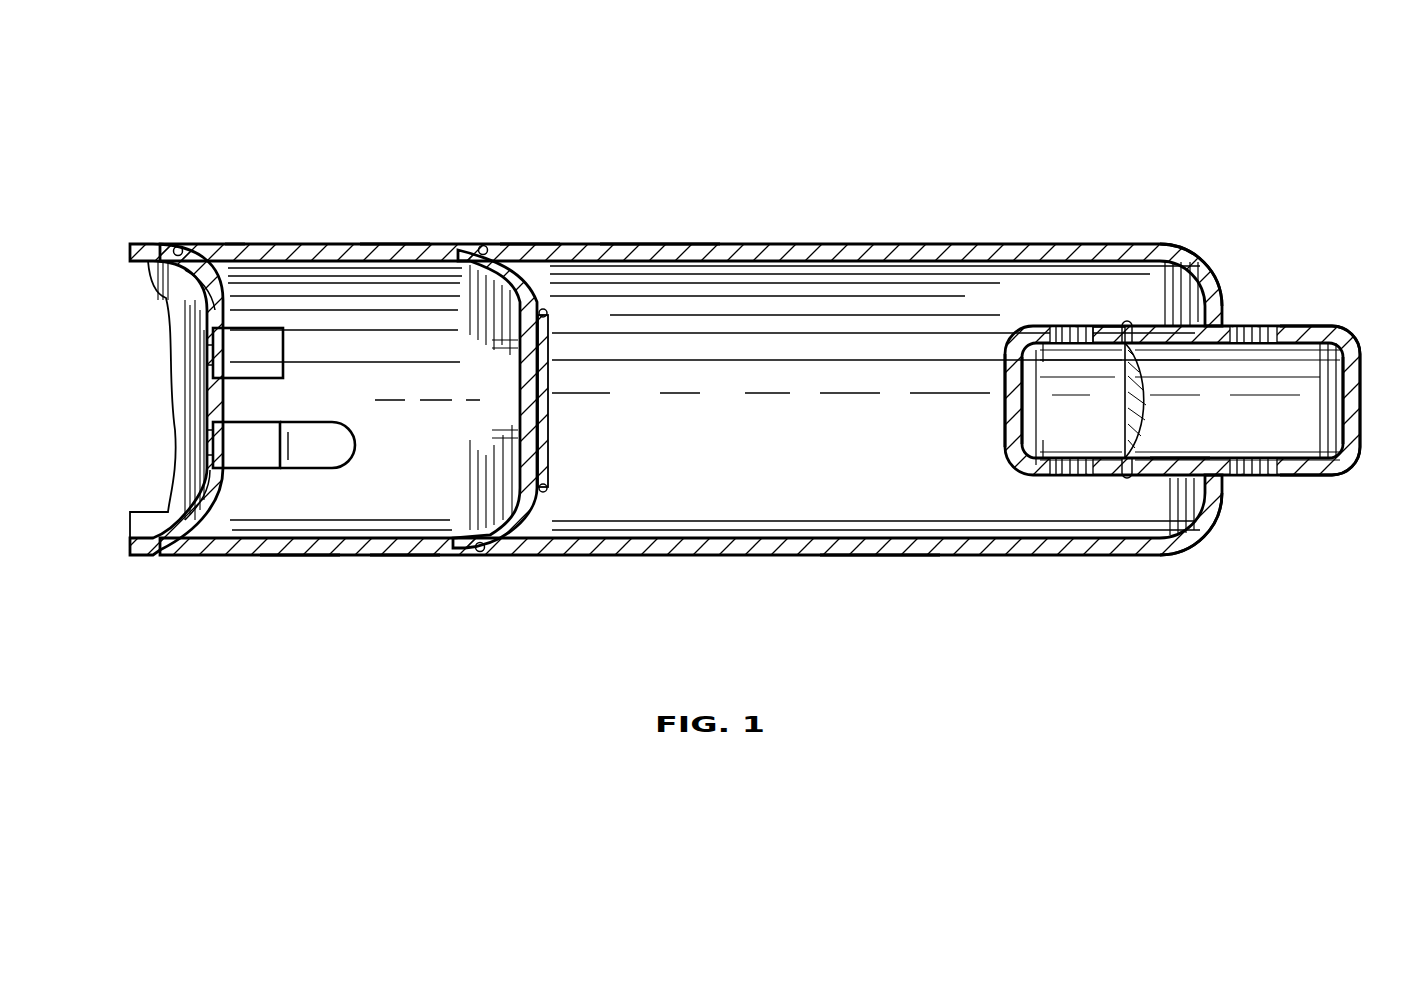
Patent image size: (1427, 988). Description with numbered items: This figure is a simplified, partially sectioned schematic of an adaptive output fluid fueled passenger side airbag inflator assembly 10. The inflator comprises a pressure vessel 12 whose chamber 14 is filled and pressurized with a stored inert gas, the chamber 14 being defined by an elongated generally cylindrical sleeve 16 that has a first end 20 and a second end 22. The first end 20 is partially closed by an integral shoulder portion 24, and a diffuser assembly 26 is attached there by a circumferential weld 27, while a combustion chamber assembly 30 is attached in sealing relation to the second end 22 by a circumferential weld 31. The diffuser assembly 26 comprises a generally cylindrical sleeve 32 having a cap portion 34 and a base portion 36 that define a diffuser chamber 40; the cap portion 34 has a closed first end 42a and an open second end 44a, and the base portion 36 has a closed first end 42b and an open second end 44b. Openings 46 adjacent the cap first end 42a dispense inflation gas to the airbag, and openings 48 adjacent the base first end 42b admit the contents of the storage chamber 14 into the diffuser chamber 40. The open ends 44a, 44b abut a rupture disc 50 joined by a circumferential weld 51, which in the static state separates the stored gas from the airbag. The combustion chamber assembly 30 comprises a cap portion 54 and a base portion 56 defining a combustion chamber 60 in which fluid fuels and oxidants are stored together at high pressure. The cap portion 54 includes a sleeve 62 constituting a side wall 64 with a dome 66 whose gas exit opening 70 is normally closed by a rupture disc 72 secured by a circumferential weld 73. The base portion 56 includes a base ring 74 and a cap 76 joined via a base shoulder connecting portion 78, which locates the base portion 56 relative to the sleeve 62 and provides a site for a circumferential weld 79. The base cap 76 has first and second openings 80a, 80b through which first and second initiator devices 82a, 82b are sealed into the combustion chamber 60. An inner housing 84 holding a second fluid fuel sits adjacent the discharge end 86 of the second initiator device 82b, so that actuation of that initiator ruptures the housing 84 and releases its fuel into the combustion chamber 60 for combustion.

The inflator assembly 10 is at (832, 172).
The pressure vessel 12 is at (806, 559).
The chamber 14 is at (878, 512).
The sleeve 16 is at (654, 244).
The first end 20 is at (1210, 280).
The second end 22 is at (514, 260).
The shoulder portion 24 is at (1212, 505).
The diffuser assembly 26 is at (1178, 381).
The circumferential weld 27 is at (1228, 324).
The combustion chamber assembly 30 is at (300, 561).
The circumferential weld 31 is at (485, 245).
The sleeve 32 is at (1178, 477).
The cap portion 34 is at (1318, 480).
The base portion 36 is at (1012, 370).
The diffuser chamber 40 is at (1316, 395).
The first end 42a is at (1356, 420).
The first end 42b is at (1012, 418).
The second end 44a is at (1140, 342).
The second end 44b is at (1103, 340).
The openings 46 is at (1265, 325).
The openings 48 is at (1063, 333).
The rupture disc 50 is at (1135, 409).
The circumferential weld 51 is at (1127, 478).
The cap portion 54 is at (406, 548).
The base portion 56 is at (208, 297).
The combustion chamber 60 is at (323, 272).
The sleeve 62 is at (238, 246).
The side wall 64 is at (394, 258).
The dome 66 is at (543, 486).
The gas exit opening 70 is at (521, 401).
The rupture disc 72 is at (548, 390).
The circumferential weld 73 is at (548, 315).
The base ring 74 is at (183, 356).
The cap 76 is at (215, 490).
The base shoulder connecting portion 78 is at (170, 505).
The circumferential weld 79 is at (177, 246).
The first opening 80a is at (213, 355).
The second opening 80b is at (213, 440).
The first initiator device 82a is at (248, 353).
The second initiator device 82b is at (275, 468).
The inner housing 84 is at (330, 468).
The discharge end 86 is at (290, 438).